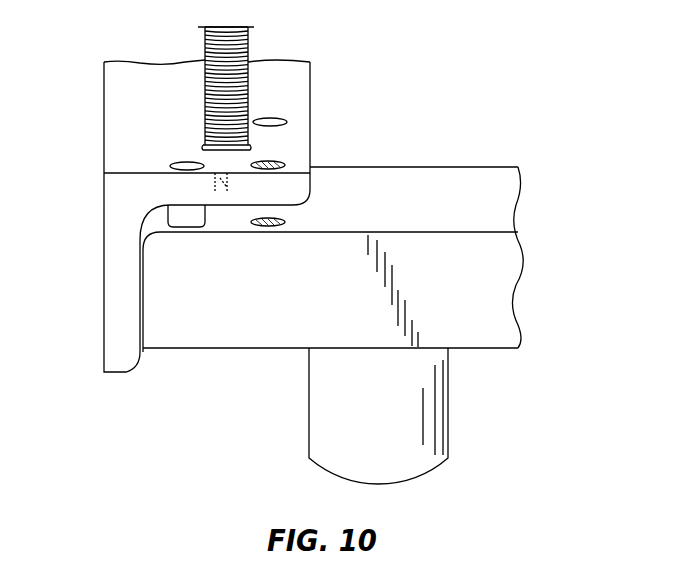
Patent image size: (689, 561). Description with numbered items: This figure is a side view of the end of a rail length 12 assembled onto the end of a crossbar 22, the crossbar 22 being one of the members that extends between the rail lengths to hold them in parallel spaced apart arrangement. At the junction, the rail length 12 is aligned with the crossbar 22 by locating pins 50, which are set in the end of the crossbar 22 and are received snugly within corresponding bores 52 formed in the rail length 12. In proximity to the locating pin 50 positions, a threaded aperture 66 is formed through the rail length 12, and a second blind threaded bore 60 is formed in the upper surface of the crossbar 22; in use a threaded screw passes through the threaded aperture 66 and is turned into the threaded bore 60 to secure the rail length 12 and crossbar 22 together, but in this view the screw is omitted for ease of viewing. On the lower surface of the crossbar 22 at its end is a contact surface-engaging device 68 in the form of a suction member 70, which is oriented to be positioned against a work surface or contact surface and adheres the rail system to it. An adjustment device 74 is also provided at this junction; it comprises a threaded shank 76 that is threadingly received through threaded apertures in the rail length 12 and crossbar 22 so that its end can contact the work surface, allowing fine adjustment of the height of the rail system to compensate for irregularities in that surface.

The rail length 12 is at (138, 203).
The crossbar 22 is at (318, 300).
The locating pin 50 is at (180, 212).
The bore 52 is at (180, 160).
The second blind threaded bore 60 is at (288, 218).
The threaded aperture 66 is at (282, 162).
The contact surface-engaging device 68 is at (454, 414).
The suction member 70 is at (332, 405).
The adjustment device 74 is at (206, 55).
The threaded shank 76 is at (250, 46).